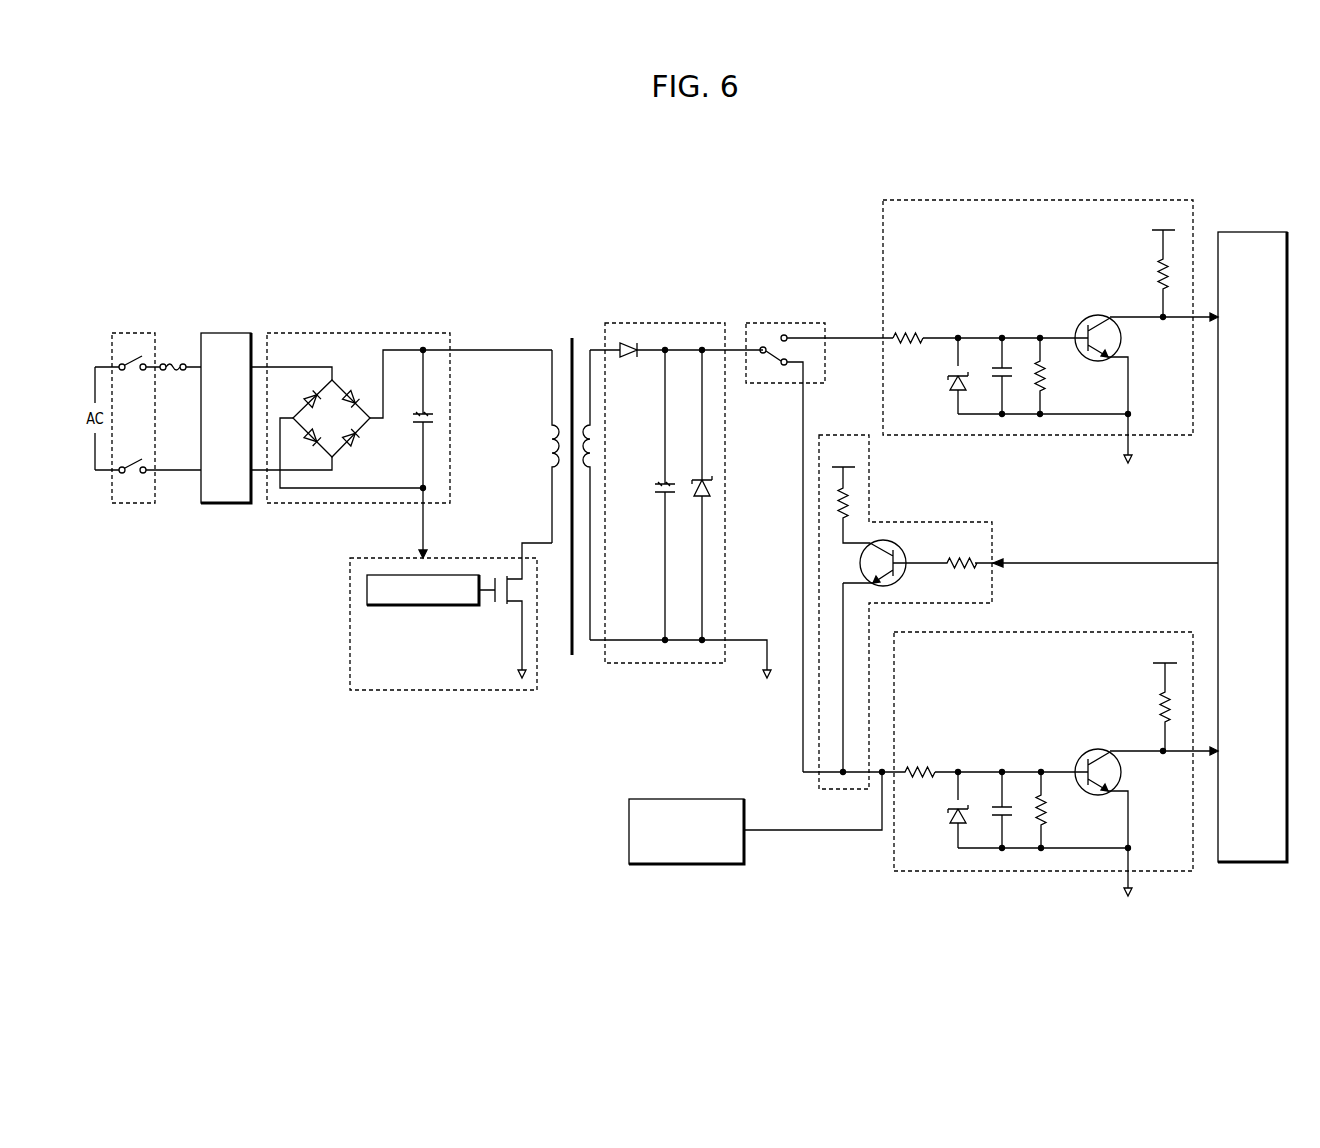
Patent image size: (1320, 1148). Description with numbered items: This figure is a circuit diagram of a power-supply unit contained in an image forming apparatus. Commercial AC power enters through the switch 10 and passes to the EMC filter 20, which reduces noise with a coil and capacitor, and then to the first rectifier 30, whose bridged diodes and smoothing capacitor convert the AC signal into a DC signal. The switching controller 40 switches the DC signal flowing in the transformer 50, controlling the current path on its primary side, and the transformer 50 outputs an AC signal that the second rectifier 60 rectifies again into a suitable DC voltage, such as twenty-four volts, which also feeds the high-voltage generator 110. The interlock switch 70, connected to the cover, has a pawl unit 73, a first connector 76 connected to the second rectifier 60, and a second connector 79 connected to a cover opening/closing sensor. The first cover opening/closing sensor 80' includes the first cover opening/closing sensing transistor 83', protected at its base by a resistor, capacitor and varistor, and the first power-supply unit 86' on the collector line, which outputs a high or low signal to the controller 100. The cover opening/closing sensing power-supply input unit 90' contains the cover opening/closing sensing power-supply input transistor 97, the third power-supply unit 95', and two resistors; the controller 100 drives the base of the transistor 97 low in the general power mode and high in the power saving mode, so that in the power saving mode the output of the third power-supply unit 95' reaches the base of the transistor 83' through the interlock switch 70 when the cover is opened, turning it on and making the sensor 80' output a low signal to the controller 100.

The switch 10 is at (135, 333).
The EMC filter 20 is at (225, 333).
The first rectifier 30 is at (358, 333).
The switching controller 40 is at (350, 622).
The transformer 50 is at (572, 338).
The second rectifier 60 is at (664, 323).
The interlock switch 70 is at (815, 525).
The pawl unit 73 is at (784, 365).
The first connector 76 is at (763, 353).
The second connector 79 is at (787, 335).
The first cover opening/closing sensor 80' is at (1050, 308).
The first cover opening/closing sensing transistor 83' is at (1098, 313).
The first power-supply unit 86' is at (1164, 235).
The cover opening/closing sensing power-supply input unit 90' is at (884, 526).
The third power-supply unit 95' is at (1018, 589).
The cover opening/closing sensing power-supply input transistor 97 is at (900, 548).
The controller 100 is at (1252, 232).
The high-voltage generator 110 is at (685, 799).